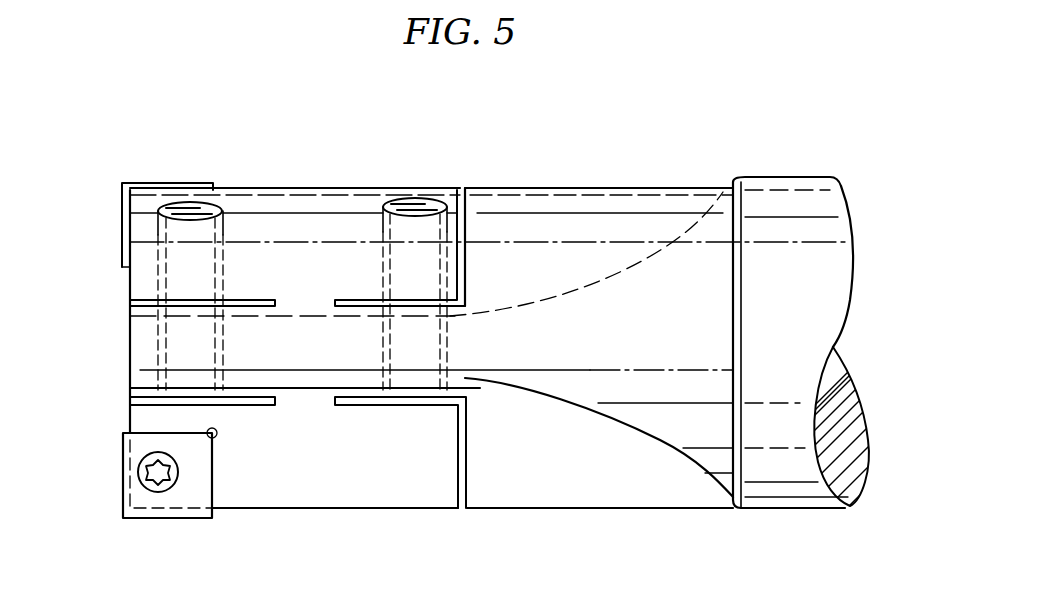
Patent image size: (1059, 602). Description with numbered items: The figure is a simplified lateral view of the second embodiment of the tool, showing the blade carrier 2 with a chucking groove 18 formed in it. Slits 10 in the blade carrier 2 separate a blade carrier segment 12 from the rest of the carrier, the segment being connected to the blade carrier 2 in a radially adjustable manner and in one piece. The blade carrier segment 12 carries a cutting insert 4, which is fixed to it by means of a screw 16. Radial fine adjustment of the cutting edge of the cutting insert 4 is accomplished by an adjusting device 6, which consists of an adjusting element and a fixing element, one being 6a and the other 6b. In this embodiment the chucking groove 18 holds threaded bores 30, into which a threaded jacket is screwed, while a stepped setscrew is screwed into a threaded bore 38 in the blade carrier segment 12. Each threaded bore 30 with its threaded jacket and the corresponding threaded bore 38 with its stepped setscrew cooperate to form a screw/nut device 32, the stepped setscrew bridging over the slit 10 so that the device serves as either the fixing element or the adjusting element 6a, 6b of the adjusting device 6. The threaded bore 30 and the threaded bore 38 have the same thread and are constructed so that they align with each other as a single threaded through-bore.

The blade carrier 2 is at (774, 200).
The cutting insert 4 is at (140, 443).
The adjusting device 6 is at (330, 153).
The adjusting element or fixing element 6a is at (452, 186).
The fixing element or adjusting element 6b is at (208, 186).
The slit 10 is at (150, 303).
The blade carrier segment 12 is at (302, 210).
The screw 16 is at (140, 475).
The chucking groove 18 is at (590, 455).
The threaded bore 30 is at (223, 233).
The screw/nut device 32 is at (197, 172).
The threaded bore 38 is at (160, 350).